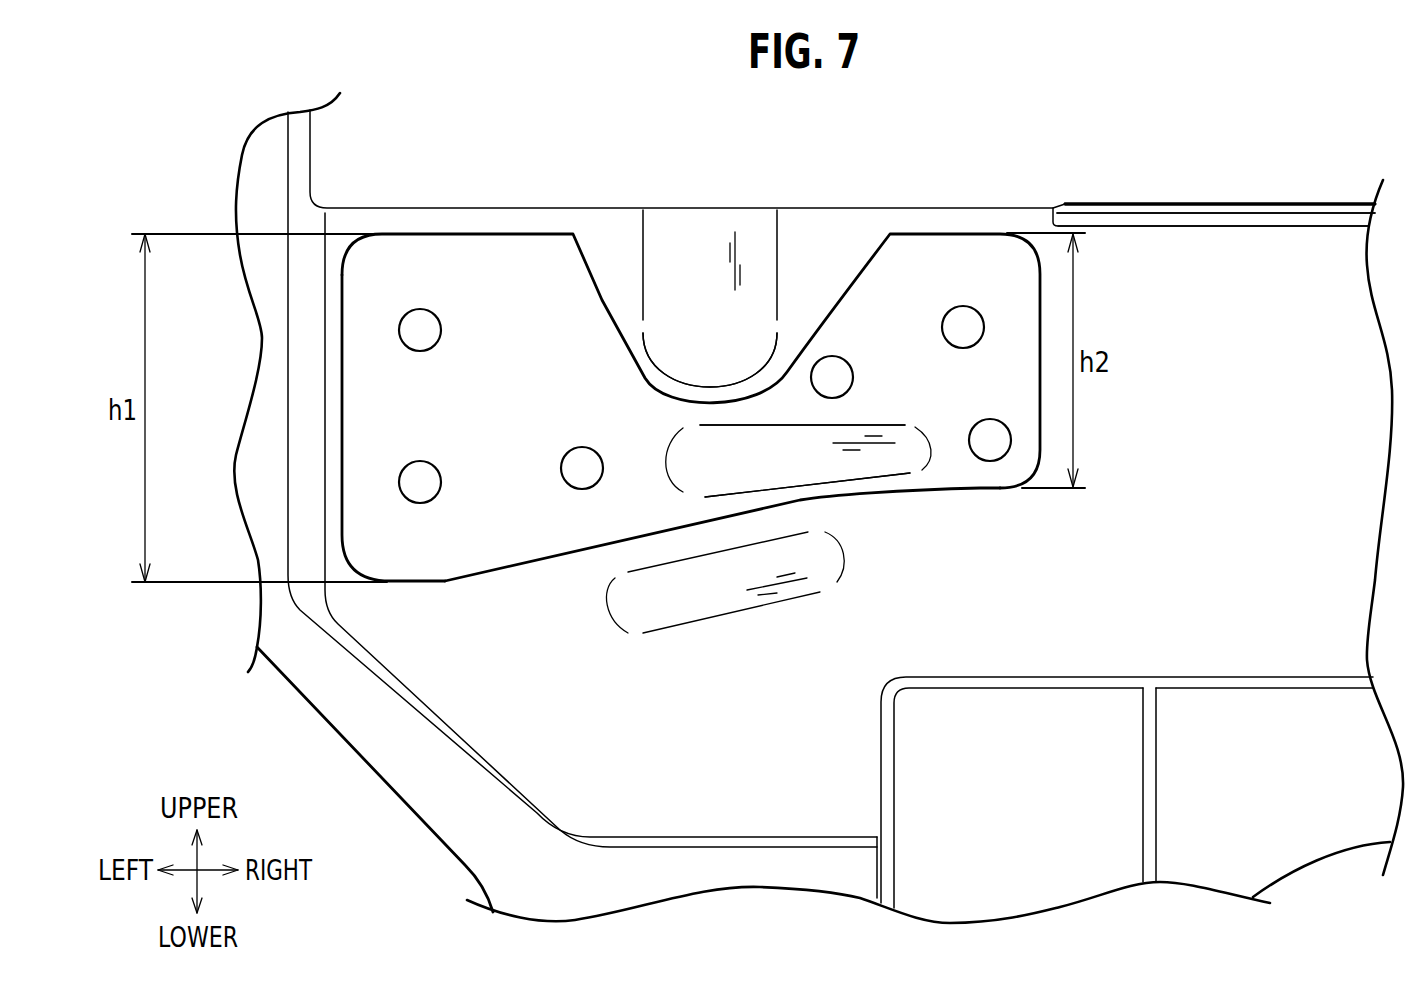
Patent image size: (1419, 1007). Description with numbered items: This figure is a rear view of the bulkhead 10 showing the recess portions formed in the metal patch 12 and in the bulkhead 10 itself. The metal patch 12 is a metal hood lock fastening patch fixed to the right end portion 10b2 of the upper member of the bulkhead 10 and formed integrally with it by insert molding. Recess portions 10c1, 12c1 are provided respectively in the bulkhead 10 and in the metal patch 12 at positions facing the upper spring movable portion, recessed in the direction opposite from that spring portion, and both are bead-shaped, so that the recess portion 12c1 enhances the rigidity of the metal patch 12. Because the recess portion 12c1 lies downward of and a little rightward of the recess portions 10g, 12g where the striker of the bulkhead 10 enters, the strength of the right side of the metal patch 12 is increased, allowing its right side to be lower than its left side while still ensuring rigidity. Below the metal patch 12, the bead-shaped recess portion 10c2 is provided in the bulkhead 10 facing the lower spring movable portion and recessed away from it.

The bulkhead 10 is at (1210, 463).
The metal patch 12 is at (523, 285).
The right end portion 10b2 is at (1117, 427).
The recess portion 10c1 is at (683, 463).
The recess portion 12c1 is at (766, 294).
The recess portion 10c2 is at (685, 598).
The recess portion 10g is at (680, 280).
The recess portion 12g is at (717, 267).